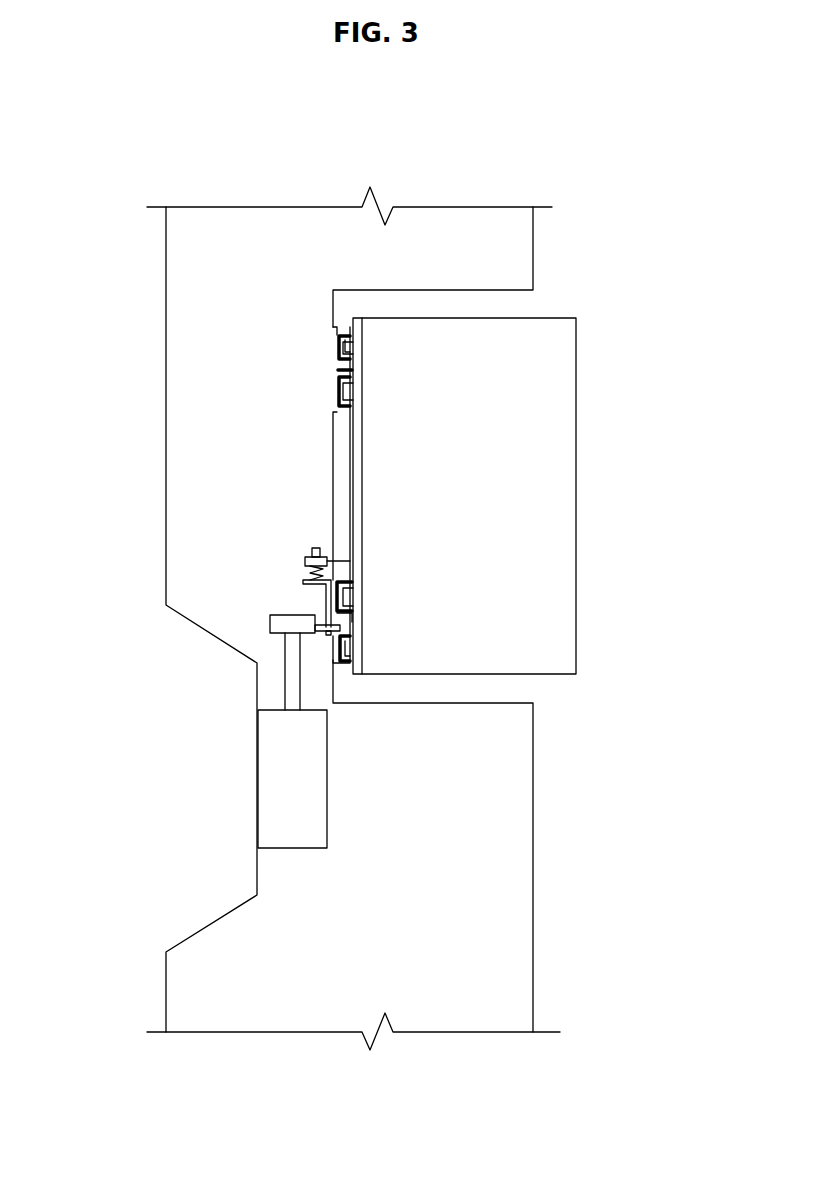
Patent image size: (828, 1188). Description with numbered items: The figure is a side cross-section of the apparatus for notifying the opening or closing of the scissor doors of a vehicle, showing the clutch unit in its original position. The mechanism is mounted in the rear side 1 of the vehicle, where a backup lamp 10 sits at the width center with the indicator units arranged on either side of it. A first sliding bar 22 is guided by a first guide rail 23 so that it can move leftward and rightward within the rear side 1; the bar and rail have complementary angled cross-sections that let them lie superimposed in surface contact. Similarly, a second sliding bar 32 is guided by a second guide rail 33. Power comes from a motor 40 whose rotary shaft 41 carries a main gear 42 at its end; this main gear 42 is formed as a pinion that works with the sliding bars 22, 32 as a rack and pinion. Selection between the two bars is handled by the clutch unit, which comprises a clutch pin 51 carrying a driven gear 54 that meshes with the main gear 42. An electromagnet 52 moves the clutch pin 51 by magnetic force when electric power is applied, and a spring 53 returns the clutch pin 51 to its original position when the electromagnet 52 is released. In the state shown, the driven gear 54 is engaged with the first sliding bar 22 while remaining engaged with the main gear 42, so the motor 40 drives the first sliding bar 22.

The rear side of the vehicle 1 is at (518, 247).
The backup lamp 10 is at (555, 440).
The first sliding bar 22 is at (337, 384).
The first guide rail 23 is at (337, 410).
The second sliding bar 32 is at (337, 350).
The second guide rail 33 is at (345, 332).
The motor 40 is at (275, 776).
The rotary shaft 41 is at (290, 690).
The main gear 42 is at (338, 627).
The clutch pin 51 is at (270, 623).
The electromagnet 52 is at (305, 562).
The spring 53 is at (305, 572).
The driven gear 54 is at (352, 612).